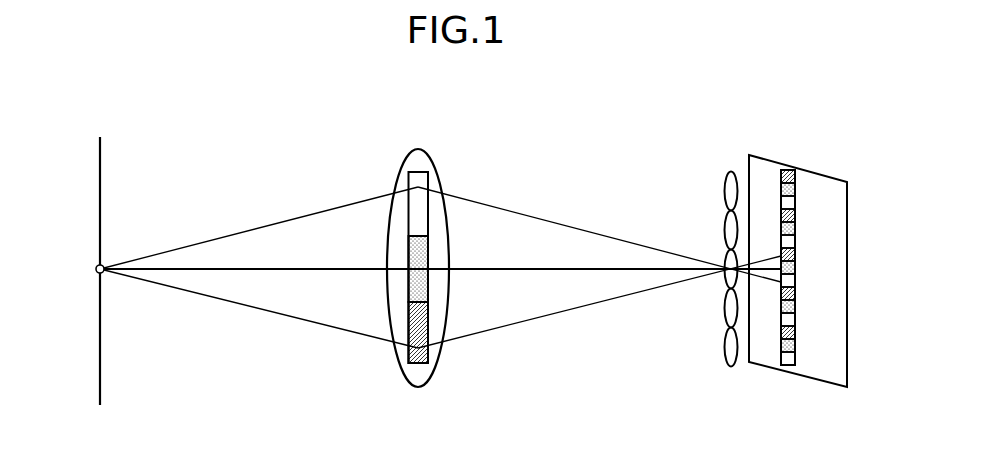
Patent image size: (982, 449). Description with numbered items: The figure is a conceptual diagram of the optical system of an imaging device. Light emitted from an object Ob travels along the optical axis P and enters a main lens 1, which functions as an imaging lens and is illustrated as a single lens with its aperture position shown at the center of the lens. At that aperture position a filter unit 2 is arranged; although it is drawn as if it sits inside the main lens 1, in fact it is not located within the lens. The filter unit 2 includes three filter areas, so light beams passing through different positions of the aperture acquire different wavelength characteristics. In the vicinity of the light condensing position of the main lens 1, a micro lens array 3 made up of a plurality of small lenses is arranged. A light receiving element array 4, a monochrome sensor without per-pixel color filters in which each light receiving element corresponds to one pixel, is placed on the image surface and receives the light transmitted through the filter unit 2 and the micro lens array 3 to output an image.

The object Ob is at (101, 158).
The optical axis P is at (95, 269).
The main lens 1 is at (418, 149).
The filter unit 2 is at (408, 219).
The micro lens array 3 is at (731, 171).
The light receiving element array 4 is at (831, 176).